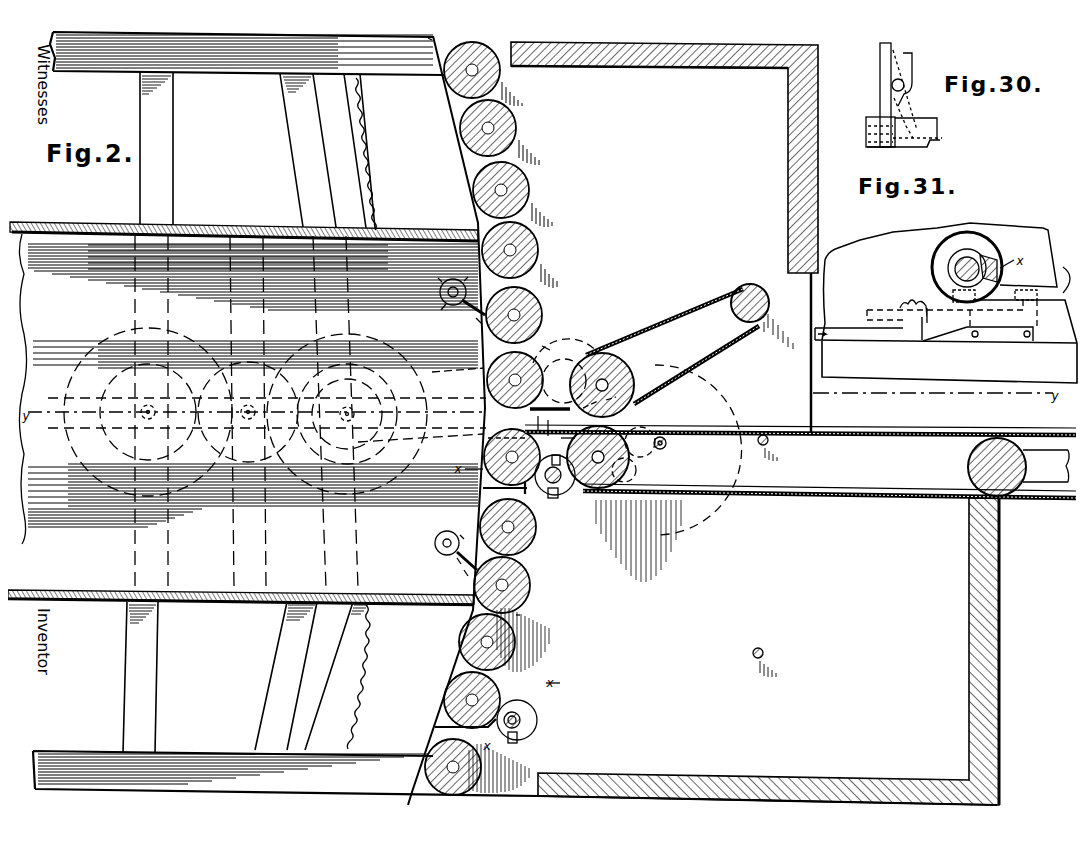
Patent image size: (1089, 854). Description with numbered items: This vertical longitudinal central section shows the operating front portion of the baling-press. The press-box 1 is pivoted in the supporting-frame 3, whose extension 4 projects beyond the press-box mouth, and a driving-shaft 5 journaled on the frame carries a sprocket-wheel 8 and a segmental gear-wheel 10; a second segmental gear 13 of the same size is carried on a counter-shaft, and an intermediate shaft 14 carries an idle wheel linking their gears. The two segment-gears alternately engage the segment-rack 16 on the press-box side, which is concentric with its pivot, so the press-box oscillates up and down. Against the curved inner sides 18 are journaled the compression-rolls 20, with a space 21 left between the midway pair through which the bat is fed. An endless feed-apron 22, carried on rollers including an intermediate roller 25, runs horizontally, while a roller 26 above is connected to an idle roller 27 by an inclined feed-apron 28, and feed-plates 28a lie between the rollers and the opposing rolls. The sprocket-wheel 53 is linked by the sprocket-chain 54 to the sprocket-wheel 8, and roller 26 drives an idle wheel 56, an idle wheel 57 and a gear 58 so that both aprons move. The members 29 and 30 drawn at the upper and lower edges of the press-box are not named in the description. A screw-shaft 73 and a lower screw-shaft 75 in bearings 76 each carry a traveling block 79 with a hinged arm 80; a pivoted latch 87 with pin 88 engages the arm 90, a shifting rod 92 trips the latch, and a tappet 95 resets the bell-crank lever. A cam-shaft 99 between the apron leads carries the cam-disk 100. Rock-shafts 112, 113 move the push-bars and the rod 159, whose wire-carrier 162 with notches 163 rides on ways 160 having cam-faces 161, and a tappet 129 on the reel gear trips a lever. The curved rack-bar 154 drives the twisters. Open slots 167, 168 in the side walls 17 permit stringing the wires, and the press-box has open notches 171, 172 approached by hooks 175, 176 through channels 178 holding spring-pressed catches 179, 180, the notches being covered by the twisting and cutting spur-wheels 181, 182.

In FIG. 2, the press-box 1 is at (257, 360).
In FIG. 2, the supporting-frame 3 is at (252, 64).
In FIG. 2, the extension 4 is at (412, 33).
In FIG. 2, the driving-shaft 5 is at (427, 17).
In FIG. 2, the sprocket-wheel 8 is at (376, 404).
In FIG. 2, the segmental gear-wheel 10 is at (418, 403).
In FIG. 2, the segmental gear 13 is at (48, 404).
In FIG. 2, the shaft 14 is at (755, 423).
In FIG. 2, the segment-rack 16 is at (226, 315).
In FIG. 2, the curved inner sides 18 is at (459, 166).
In FIG. 2, the compression-rolls 20 is at (466, 40).
In FIG. 2, the space 21 is at (508, 424).
In FIG. 2, the endless feed-apron 22 is at (810, 491).
In FIG. 2, the intermediate roller 25 is at (964, 449).
In FIG. 2, the roller 26 is at (612, 358).
In FIG. 2, the idle roller 27 is at (720, 310).
In FIG. 2, the inclined endless feed-apron 28 is at (708, 340).
In FIG. 2, the feed-plates 28a is at (548, 422).
In FIG. 2, the cross bar 29 is at (44, 215).
In FIG. 2, the cross bar 30 is at (56, 592).
In FIG. 2, the sprocket-wheel 53 is at (544, 355).
In FIG. 2, the endless sprocket-chain 54 is at (478, 360).
In FIG. 2, the idle wheel 56 is at (604, 344).
In FIG. 2, the idle wheel 57 is at (636, 384).
In FIG. 2, the gear 58 is at (654, 443).
In FIG. 2, the screw-shaft 73 is at (544, 488).
In FIG. 2, the screw-shaft 75 is at (532, 700).
In FIG. 31, the screw-shaft 75 is at (962, 250).
In FIG. 30, the bearings 76 is at (872, 84).
In FIG. 2, the traveling block 79 is at (558, 485).
In FIG. 31, the traveling block 79 is at (947, 254).
In FIG. 2, the arm 80 is at (508, 736).
In FIG. 30, the pivoted latch 87 is at (906, 60).
In FIG. 30, the pin 88 is at (858, 123).
In FIG. 30, the horizontally-disposed arm 90 is at (858, 141).
In FIG. 2, the shifting rod 92 is at (560, 428).
In FIG. 30, the tappet 95 is at (898, 82).
In FIG. 2, the cam-shaft 99 is at (659, 437).
In FIG. 2, the cam-disk 100 is at (781, 385).
In FIG. 2, the rock-shaft 112 is at (758, 432).
In FIG. 2, the rock-shaft 113 is at (746, 643).
In FIG. 2, the tappet 129 is at (448, 298).
In FIG. 2, the curved rack-bar 154 is at (370, 152).
In FIG. 31, the rod 159 is at (842, 317).
In FIG. 31, the ways 160 is at (1025, 338).
In FIG. 31, the cam-faces 161 is at (958, 334).
In FIG. 31, the wire-carrier 162 is at (912, 336).
In FIG. 31, the notches 163 is at (900, 292).
In FIG. 2, the open slot 167 is at (475, 482).
In FIG. 2, the open slot 168 is at (427, 720).
In FIG. 31, the open slot 168 is at (1064, 269).
In FIG. 2, the open notch 171 is at (434, 286).
In FIG. 2, the open notch 172 is at (452, 527).
In FIG. 2, the hook 175 is at (540, 334).
In FIG. 2, the hook 176 is at (512, 607).
In FIG. 2, the channels 178 is at (450, 556).
In FIG. 2, the spring-pressed catch 179 is at (452, 569).
In FIG. 2, the spring-pressed catch 180 is at (470, 316).
In FIG. 2, the spur-wheel 181 is at (433, 306).
In FIG. 2, the spur-wheel 182 is at (427, 530).
In FIG. 31, the side walls 17 is at (866, 230).